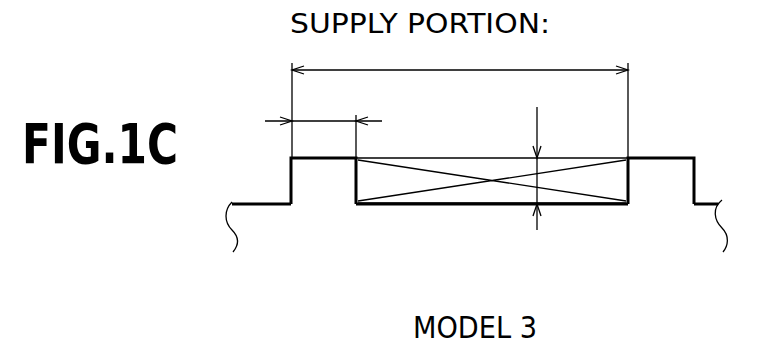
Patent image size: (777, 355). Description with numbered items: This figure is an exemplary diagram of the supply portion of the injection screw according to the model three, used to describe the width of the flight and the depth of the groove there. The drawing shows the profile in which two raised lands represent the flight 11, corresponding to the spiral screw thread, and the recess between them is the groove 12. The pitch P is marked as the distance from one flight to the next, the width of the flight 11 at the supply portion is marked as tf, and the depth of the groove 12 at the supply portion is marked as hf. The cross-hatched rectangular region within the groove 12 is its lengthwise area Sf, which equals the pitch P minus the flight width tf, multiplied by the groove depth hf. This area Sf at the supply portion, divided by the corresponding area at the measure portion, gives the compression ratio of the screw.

The flight 11 is at (306, 158).
The groove 12 is at (357, 180).
The lengthwise area of the groove Sf is at (482, 192).
The pitch P is at (460, 101).
The width of the flight at the supply portion tf is at (323, 121).
The depth of the groove at the supply portion hf is at (552, 159).